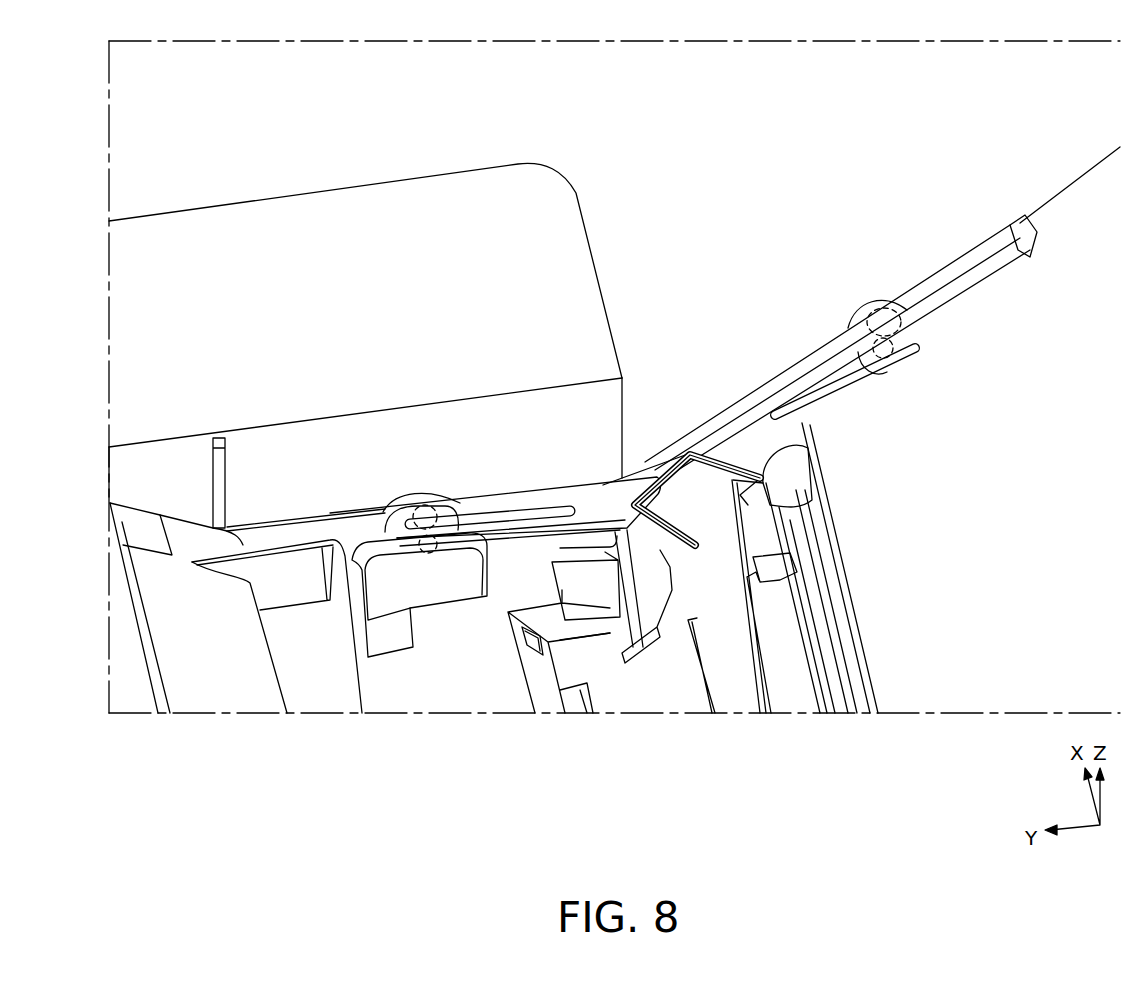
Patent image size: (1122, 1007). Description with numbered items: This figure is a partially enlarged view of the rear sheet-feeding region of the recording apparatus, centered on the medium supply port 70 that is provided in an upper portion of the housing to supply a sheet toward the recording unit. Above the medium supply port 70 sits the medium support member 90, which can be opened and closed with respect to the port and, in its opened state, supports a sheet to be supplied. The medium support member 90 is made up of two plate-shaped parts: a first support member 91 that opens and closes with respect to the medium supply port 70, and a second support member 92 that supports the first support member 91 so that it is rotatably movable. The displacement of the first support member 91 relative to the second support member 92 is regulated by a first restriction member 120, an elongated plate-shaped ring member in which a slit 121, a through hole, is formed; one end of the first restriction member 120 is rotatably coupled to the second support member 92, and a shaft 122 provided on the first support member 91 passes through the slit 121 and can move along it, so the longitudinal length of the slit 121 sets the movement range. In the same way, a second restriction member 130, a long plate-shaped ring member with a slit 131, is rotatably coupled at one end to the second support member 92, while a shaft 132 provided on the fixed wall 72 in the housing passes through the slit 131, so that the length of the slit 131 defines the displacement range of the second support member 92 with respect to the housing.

The medium supply port 70 is at (567, 667).
The fixed wall 72 is at (452, 701).
The medium support member 90 is at (877, 307).
The first support member 91 is at (1048, 216).
The second support member 92 is at (660, 447).
The first restriction member 120 is at (841, 346).
The slit 121 is at (803, 388).
The shaft 122 is at (882, 308).
The second restriction member 130 is at (495, 495).
The slit 131 is at (512, 521).
The shaft 132 is at (427, 505).